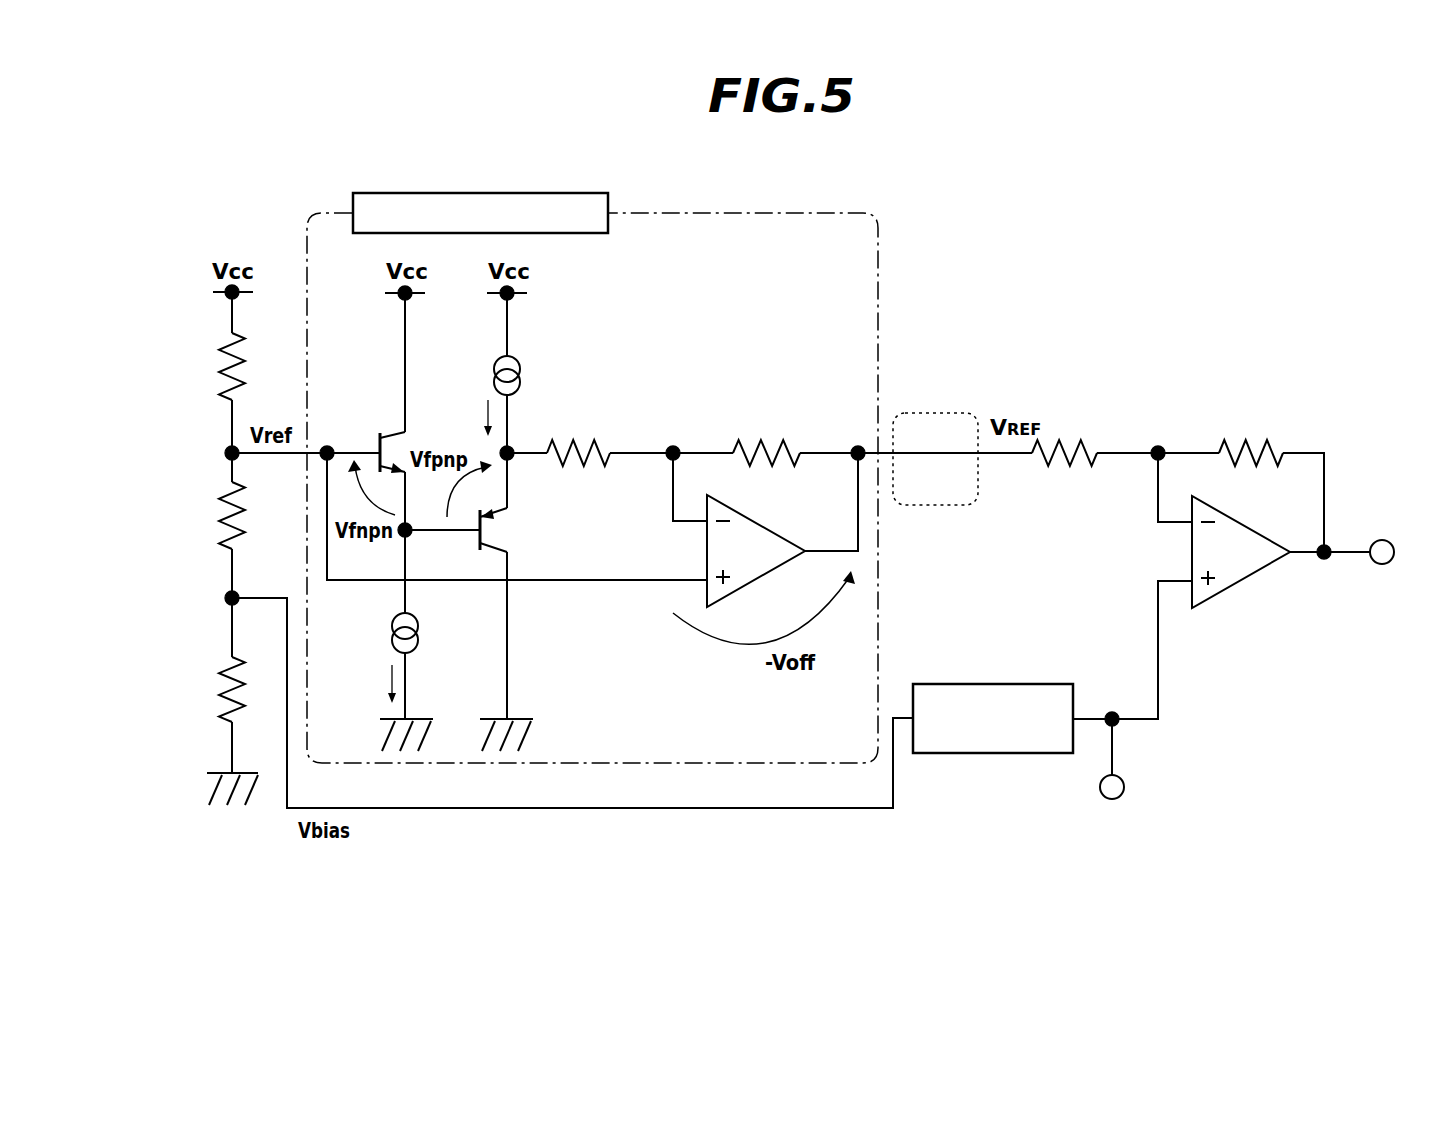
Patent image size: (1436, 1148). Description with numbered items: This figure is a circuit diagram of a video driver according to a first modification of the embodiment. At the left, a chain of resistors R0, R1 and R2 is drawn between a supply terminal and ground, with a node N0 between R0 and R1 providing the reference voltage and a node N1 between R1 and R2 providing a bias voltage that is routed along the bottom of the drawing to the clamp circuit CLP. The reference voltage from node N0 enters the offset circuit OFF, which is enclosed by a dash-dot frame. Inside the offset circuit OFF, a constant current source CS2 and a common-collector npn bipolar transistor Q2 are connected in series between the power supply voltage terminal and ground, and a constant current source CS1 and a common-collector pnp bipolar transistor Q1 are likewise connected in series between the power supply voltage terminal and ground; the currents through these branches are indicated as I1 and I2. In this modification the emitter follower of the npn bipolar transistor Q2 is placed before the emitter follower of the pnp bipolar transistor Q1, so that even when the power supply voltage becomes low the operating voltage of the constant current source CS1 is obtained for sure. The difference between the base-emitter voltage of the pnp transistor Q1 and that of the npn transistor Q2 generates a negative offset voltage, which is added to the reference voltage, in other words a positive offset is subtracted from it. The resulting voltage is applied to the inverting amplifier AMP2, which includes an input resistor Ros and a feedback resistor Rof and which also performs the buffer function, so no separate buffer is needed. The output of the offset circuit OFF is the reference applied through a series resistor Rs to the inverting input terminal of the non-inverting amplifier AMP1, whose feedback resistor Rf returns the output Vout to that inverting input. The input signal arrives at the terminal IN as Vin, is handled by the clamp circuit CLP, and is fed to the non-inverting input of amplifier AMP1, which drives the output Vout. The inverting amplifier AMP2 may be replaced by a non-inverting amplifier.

The resistor R0 is at (251, 366).
The resistor R1 is at (250, 515).
The resistor R2 is at (249, 689).
The node N0 is at (228, 450).
The node N1 is at (228, 596).
The pnp bipolar transistor Q1 is at (470, 530).
The npn bipolar transistor Q2 is at (382, 439).
The constant current source CS1 is at (531, 375).
The constant current source CS2 is at (428, 633).
The current I1 is at (474, 417).
The current I2 is at (379, 684).
The input resistor Ros is at (578, 472).
The feedback resistor Rof is at (766, 472).
The resistor Rs is at (1064, 472).
The feedback resistor Rf is at (1271, 496).
The non-inverting amplifier AMP1 is at (1232, 586).
The inverting amplifier AMP2 is at (765, 532).
The offset circuit OFF is at (808, 213).
The clamp circuit CLP is at (988, 753).
The input terminal IN is at (1122, 794).
The input voltage node Vin is at (1114, 706).
The output terminal Vout is at (1385, 570).